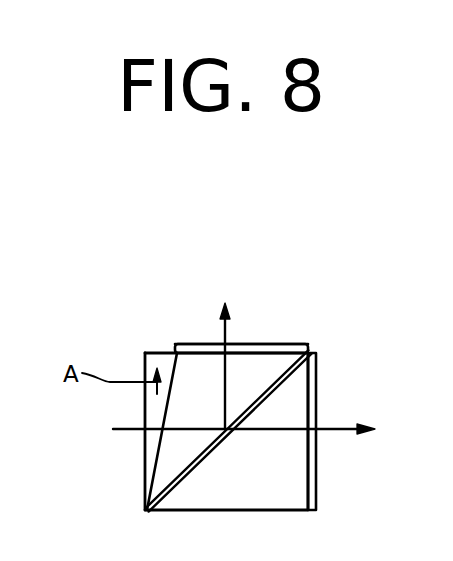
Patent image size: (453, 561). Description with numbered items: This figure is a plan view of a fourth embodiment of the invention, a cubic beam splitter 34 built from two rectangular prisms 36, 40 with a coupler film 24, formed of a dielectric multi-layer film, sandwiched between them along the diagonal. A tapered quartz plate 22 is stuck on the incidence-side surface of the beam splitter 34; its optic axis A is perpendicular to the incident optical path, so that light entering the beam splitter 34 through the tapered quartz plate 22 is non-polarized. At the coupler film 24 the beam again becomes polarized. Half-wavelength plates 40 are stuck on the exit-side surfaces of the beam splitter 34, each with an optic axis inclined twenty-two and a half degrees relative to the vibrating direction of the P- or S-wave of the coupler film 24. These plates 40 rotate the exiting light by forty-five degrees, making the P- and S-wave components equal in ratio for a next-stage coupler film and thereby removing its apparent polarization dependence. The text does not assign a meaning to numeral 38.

The tapered quartz plate 22 is at (160, 353).
The coupler film 24 is at (274, 376).
The cubic beam splitter 34 is at (244, 341).
The rectangular prism 36 is at (198, 362).
The beam splitter cube 38 is at (293, 480).
The ½ wavelength plate 40 is at (295, 346).